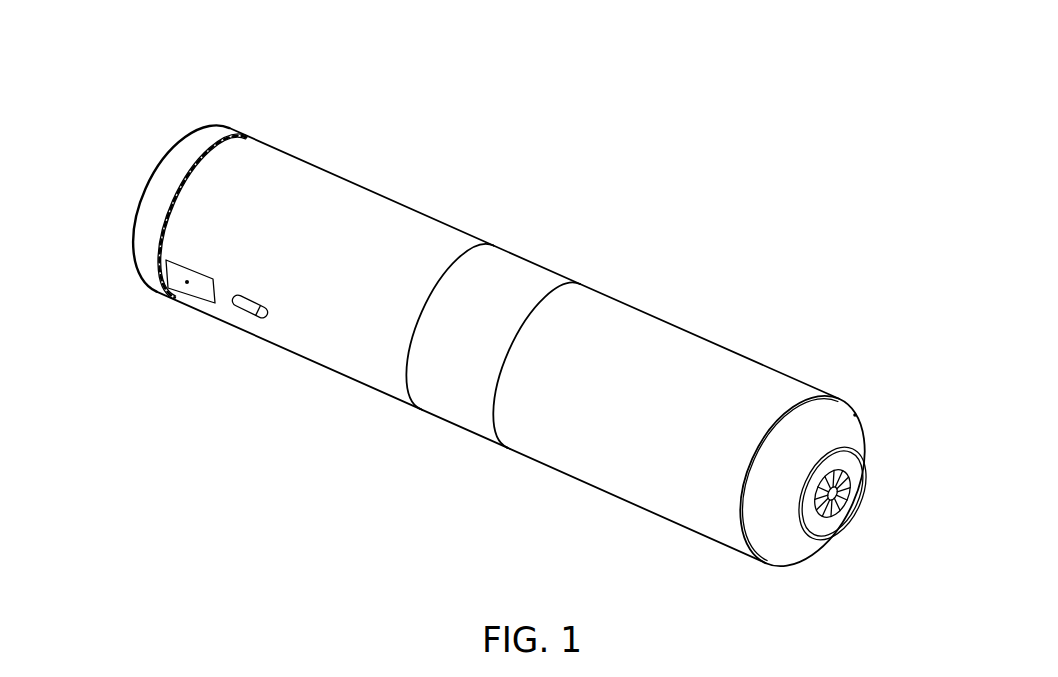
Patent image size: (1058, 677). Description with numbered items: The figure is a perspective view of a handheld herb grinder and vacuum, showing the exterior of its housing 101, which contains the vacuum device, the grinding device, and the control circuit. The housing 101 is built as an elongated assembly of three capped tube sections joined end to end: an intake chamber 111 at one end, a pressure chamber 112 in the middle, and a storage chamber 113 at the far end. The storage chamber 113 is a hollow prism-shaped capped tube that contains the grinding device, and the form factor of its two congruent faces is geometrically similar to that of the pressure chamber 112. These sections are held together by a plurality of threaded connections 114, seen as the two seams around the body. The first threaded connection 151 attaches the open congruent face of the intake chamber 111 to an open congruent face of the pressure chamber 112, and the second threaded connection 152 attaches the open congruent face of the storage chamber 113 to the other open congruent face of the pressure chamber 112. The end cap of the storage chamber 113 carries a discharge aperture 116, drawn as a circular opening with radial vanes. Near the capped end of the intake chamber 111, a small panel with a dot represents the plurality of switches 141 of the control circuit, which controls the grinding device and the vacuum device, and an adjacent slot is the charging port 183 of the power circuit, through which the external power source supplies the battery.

The housing 101 is at (128, 110).
The intake chamber 111 is at (302, 178).
The pressure chamber 112 is at (507, 297).
The storage chamber 113 is at (668, 370).
The plurality of threaded connections 114 is at (508, 450).
The discharge aperture 116 is at (842, 497).
The plurality of switches 141 is at (192, 297).
The first threaded connection 151 is at (496, 247).
The second threaded connection 152 is at (583, 284).
The charging port 183 is at (255, 318).